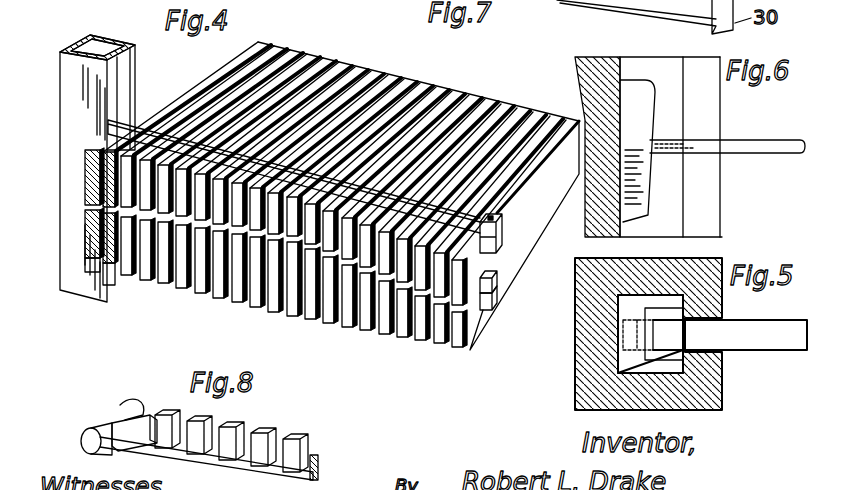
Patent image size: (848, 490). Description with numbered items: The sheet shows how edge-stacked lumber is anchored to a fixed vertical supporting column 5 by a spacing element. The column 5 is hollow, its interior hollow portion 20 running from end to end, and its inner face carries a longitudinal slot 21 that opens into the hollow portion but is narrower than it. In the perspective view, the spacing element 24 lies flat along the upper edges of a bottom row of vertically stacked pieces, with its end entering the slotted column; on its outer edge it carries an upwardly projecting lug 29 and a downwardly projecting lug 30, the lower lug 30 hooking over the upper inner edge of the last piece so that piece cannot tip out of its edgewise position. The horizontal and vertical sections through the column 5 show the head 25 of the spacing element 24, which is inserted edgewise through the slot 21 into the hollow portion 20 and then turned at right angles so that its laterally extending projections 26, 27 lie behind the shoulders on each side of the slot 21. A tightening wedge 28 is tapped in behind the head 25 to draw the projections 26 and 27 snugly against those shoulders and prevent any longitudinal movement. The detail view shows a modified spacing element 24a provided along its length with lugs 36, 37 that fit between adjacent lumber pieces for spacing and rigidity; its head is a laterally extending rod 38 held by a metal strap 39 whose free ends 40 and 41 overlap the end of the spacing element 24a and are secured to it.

In FIG. 5, the vertical supporting column 5 is at (582, 388).
In FIG. 4, the interior hollow portion 20 is at (103, 46).
In FIG. 6, the interior hollow portion 20 is at (644, 155).
In FIG. 5, the interior hollow portion 20 is at (630, 364).
In FIG. 4, the longitudinal slot 21 is at (120, 72).
In FIG. 6, the longitudinal slot 21 is at (700, 108).
In FIG. 5, the longitudinal slot 21 is at (722, 355).
In FIG. 4, the spacing element 24 is at (143, 133).
In FIG. 6, the spacing element 24 is at (787, 152).
In FIG. 5, the spacing element 24 is at (777, 330).
In FIG. 8, the modified spacing element 24a is at (317, 453).
In FIG. 6, the head 25 is at (663, 155).
In FIG. 5, the head 25 is at (671, 335).
In FIG. 5, the laterally extending projection 26 is at (663, 308).
In FIG. 6, the laterally extending projection 27 is at (662, 142).
In FIG. 5, the laterally extending projection 27 is at (680, 365).
In FIG. 6, the tightening wedge 28 is at (650, 100).
In FIG. 5, the tightening wedge 28 is at (627, 336).
In FIG. 4, the upwardly projecting lug 29 is at (497, 278).
In FIG. 4, the downwardly projecting lug 30 is at (498, 297).
In FIG. 8, the lug 36 is at (300, 440).
In FIG. 8, the lug 37 is at (189, 462).
In FIG. 8, the laterally extending rod 38 is at (120, 400).
In FIG. 8, the metal strap 39 is at (110, 418).
In FIG. 8, the free end of strap 40 is at (143, 417).
In FIG. 8, the free end of strap 41 is at (103, 443).